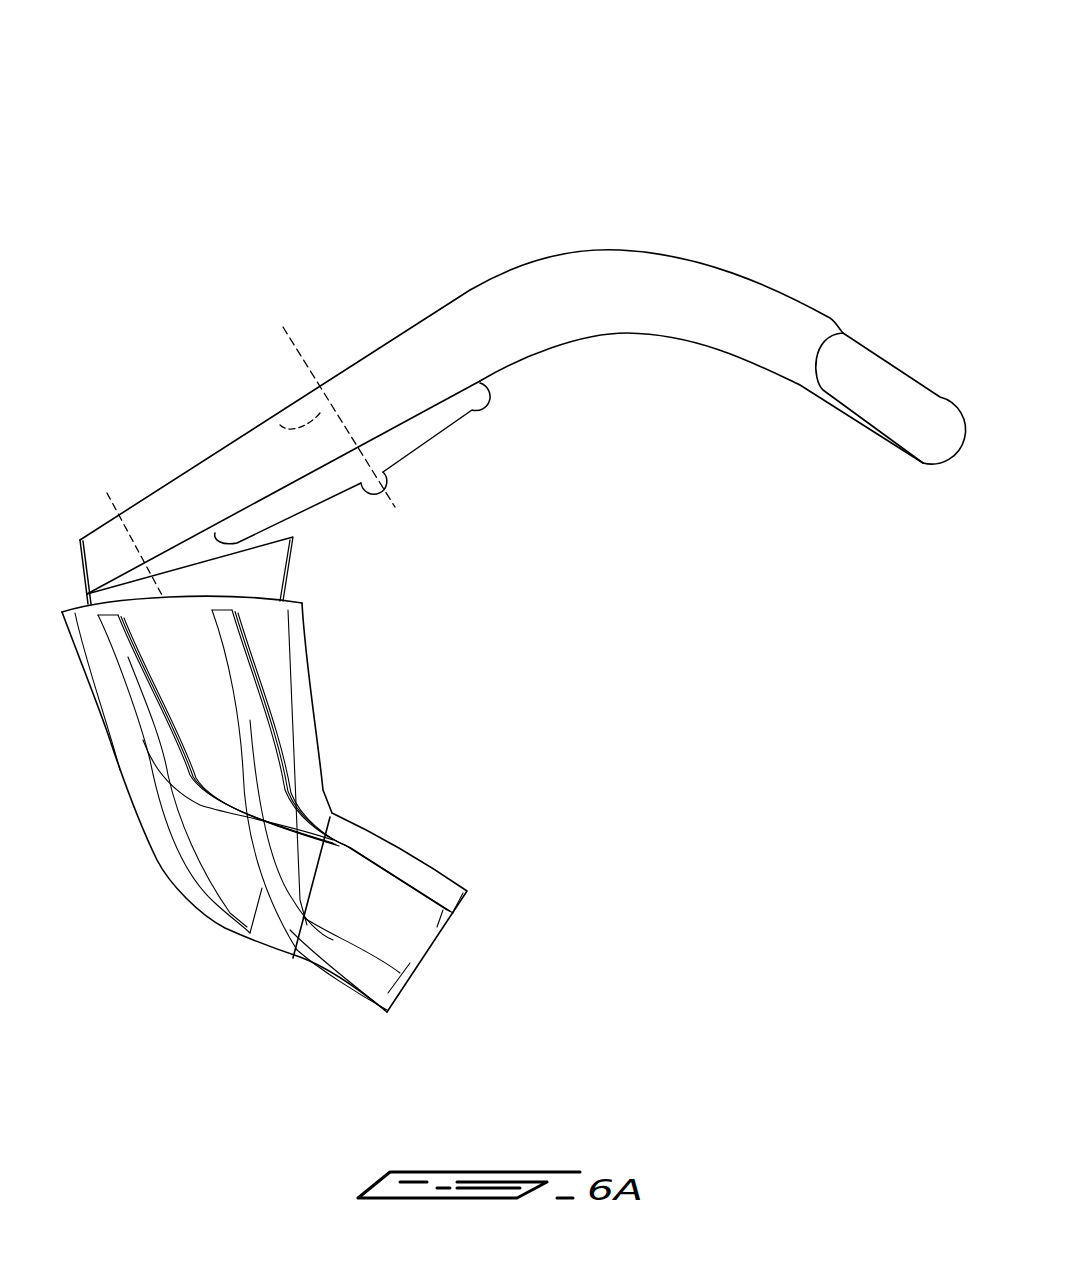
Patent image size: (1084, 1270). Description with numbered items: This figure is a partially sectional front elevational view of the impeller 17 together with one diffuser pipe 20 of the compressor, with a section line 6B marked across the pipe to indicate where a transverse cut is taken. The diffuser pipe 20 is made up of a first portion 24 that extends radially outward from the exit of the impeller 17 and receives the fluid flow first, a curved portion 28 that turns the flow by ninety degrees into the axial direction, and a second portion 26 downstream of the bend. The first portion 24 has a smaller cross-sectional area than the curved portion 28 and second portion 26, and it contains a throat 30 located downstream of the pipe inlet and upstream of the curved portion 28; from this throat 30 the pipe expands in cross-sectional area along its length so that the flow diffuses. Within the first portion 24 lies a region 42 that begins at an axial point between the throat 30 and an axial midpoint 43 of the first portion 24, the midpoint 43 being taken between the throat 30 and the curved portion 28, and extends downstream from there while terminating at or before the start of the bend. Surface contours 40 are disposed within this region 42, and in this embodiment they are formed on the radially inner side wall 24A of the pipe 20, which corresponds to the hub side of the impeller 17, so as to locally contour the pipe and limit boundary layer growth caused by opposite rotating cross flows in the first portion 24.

The impeller 17 is at (108, 740).
The diffuser pipe 20 is at (620, 217).
The first portion 24 is at (383, 347).
The radially inner side wall 24A is at (185, 541).
The second portion 26 is at (797, 307).
The curved portion 28 is at (607, 337).
The throat 30 is at (108, 495).
The surface contours 40 is at (277, 483).
The region 42 is at (383, 492).
The axial midpoint 43 is at (280, 425).
The section line 6B is at (250, 350).